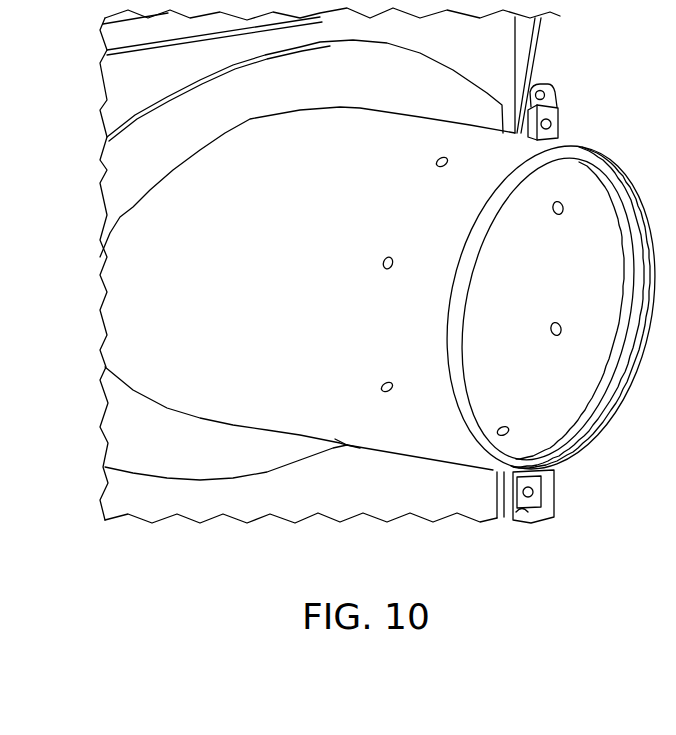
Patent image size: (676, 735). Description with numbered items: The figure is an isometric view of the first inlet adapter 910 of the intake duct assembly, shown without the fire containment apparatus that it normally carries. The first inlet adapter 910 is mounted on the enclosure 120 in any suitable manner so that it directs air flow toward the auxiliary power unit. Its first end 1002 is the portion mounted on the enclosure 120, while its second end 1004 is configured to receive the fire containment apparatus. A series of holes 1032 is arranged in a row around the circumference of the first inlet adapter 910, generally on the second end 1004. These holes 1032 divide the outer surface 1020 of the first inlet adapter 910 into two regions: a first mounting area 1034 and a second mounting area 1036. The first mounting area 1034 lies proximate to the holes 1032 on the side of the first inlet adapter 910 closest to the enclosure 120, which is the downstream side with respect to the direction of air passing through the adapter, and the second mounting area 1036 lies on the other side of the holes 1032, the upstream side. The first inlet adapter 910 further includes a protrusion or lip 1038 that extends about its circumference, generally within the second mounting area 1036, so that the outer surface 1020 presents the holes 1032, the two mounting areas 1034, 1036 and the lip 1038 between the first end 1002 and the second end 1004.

The enclosure 120 is at (118, 71).
The first end 1002 is at (133, 205).
The first inlet adapter 910 is at (140, 316).
The outer surface 1020 is at (137, 340).
The holes 1032 is at (382, 262).
The second mounting area 1036 is at (450, 238).
The protrusion or lip 1038 is at (446, 332).
The first mounting area 1034 is at (335, 417).
The second end 1004 is at (448, 438).